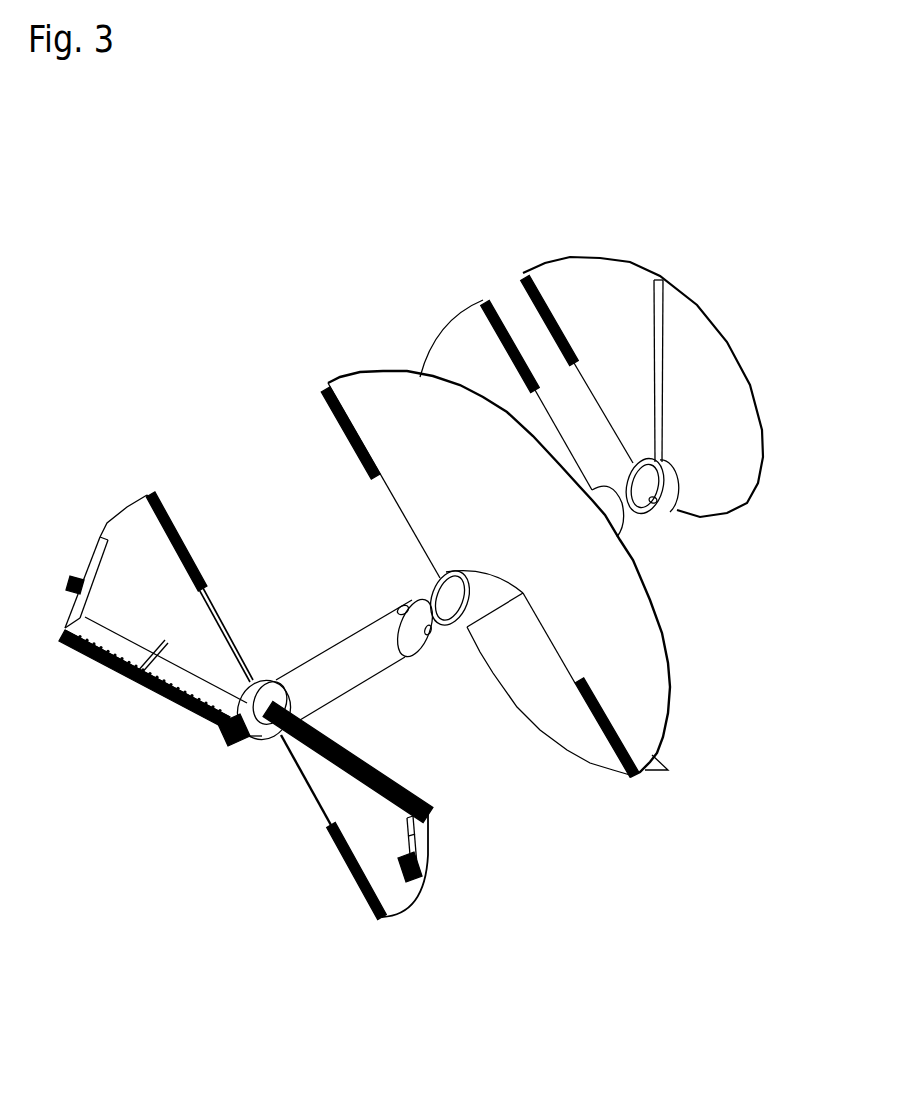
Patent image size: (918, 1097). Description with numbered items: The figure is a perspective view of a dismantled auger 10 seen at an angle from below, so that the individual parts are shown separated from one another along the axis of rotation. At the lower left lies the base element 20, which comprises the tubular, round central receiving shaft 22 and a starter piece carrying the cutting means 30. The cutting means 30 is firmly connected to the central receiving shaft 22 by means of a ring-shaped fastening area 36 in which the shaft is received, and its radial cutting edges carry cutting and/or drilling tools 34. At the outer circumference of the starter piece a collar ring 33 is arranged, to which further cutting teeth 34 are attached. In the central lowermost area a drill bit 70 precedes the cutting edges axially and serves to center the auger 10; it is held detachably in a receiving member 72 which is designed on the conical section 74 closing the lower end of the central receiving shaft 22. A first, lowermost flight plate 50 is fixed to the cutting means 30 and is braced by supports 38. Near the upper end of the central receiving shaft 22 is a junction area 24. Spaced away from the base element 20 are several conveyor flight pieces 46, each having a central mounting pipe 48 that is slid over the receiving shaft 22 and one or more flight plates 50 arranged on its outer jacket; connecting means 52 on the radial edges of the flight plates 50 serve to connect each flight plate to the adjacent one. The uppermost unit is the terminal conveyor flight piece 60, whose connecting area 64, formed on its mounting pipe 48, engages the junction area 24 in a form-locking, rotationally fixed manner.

The auger 10 is at (275, 245).
The base element 20 is at (178, 830).
The central receiving shaft 22 is at (332, 662).
The junction area 24 is at (402, 604).
The cutting means 30 is at (170, 712).
The collar ring 33 is at (433, 828).
The cutting and/or drilling tools 34 is at (72, 578).
The ring-shaped fastening area 36 is at (290, 712).
The supports 38 is at (125, 684).
The conveyor flight pieces 46 is at (275, 326).
The central mounting pipe 48 is at (484, 602).
The flight plate 50 is at (438, 510).
The connecting means 52 is at (330, 390).
The terminal conveyor flight piece 60 is at (728, 201).
The connecting area 64 is at (686, 497).
The drill bit 70 is at (221, 745).
The receiving member 72 is at (248, 751).
The conical section 74 is at (255, 700).